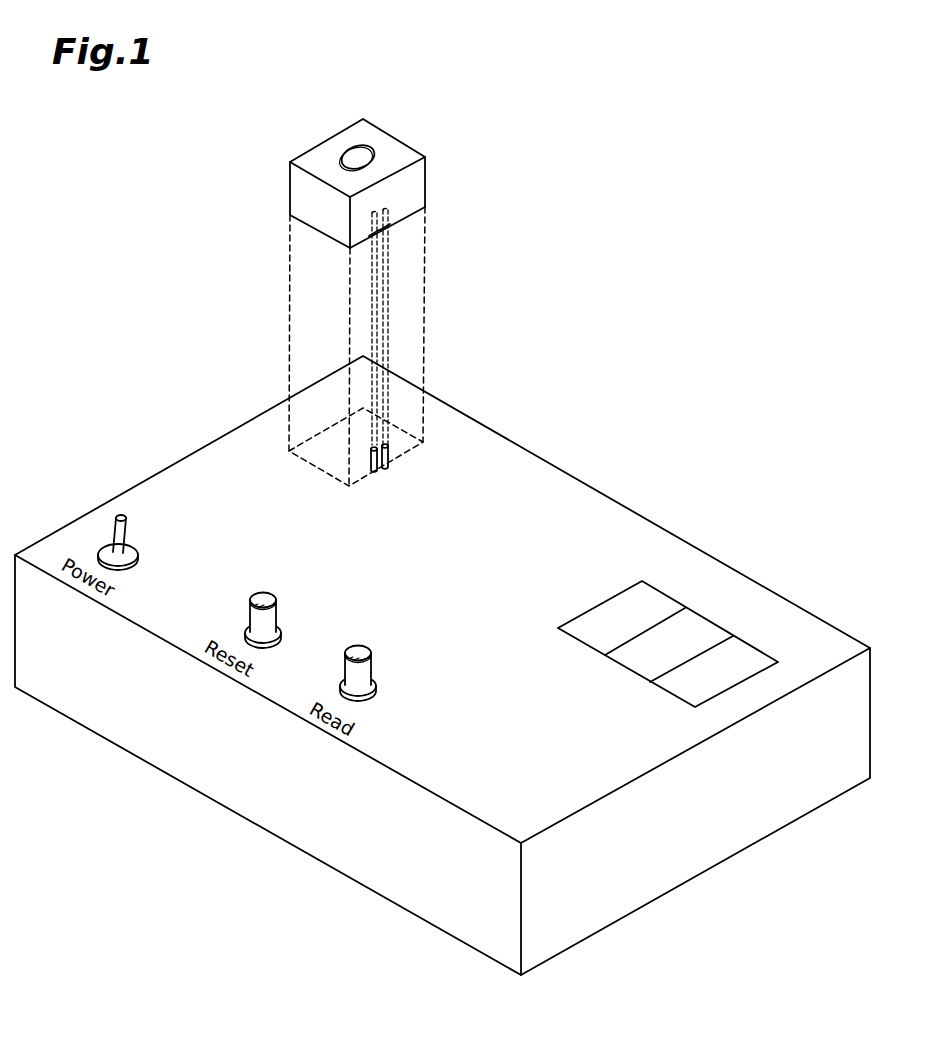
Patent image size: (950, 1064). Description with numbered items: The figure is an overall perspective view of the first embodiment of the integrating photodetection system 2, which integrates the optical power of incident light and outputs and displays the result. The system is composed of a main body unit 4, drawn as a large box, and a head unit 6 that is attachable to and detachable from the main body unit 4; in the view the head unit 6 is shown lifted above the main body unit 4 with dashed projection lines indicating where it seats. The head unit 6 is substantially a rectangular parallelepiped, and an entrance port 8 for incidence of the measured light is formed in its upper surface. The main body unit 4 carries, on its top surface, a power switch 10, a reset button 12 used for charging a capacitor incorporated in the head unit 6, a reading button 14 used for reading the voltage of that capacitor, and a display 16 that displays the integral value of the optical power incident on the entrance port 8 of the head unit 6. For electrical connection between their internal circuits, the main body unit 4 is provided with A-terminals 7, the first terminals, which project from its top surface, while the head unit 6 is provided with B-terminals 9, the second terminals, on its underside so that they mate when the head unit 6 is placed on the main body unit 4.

The integrating photodetection system 2 is at (507, 107).
The main body unit 4 is at (685, 883).
The head unit 6 is at (380, 289).
The A-terminals 7 is at (417, 466).
The entrance port 8 is at (366, 153).
The B-terminals 9 is at (384, 246).
The power switch 10 is at (112, 521).
The reset button 12 is at (257, 592).
The reading button 14 is at (353, 645).
The display 16 is at (717, 624).